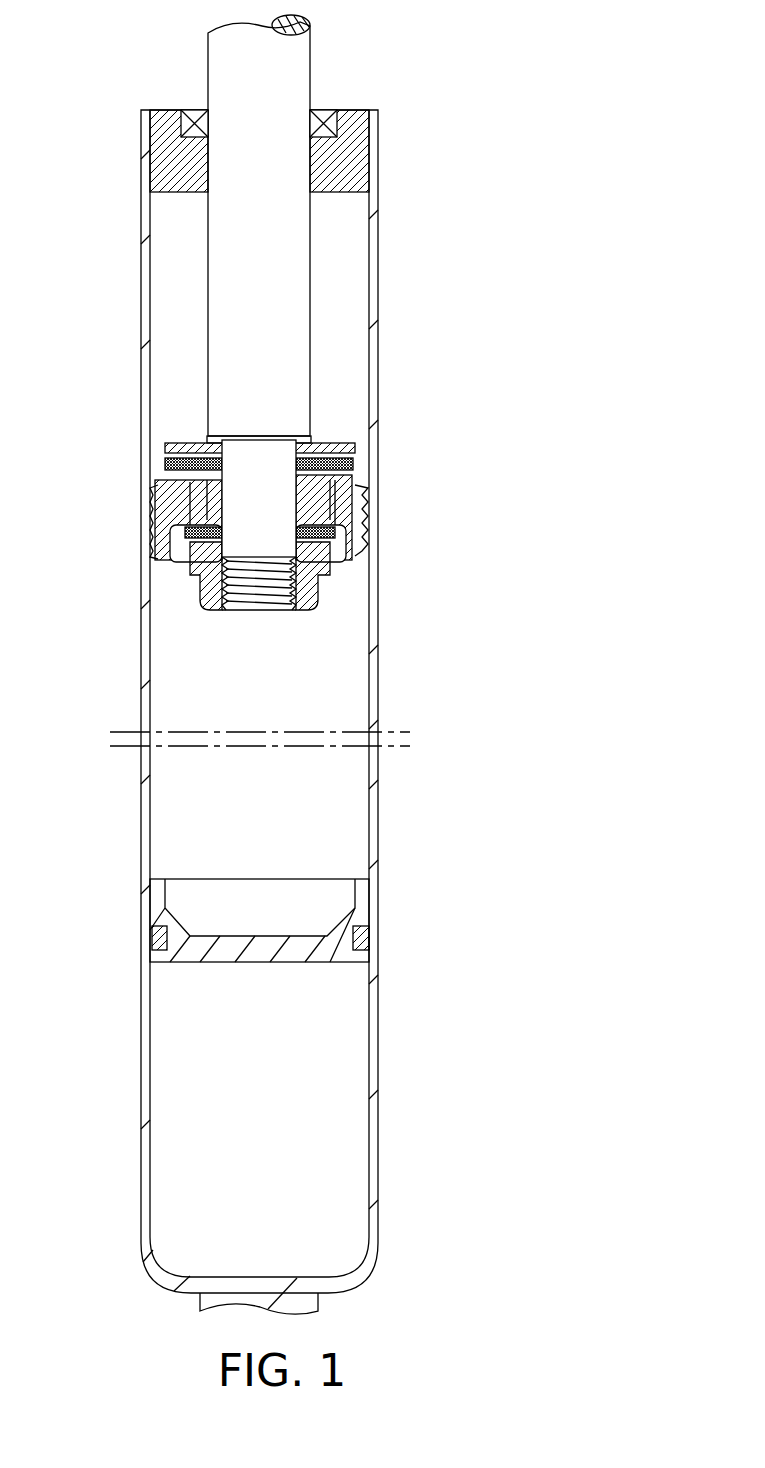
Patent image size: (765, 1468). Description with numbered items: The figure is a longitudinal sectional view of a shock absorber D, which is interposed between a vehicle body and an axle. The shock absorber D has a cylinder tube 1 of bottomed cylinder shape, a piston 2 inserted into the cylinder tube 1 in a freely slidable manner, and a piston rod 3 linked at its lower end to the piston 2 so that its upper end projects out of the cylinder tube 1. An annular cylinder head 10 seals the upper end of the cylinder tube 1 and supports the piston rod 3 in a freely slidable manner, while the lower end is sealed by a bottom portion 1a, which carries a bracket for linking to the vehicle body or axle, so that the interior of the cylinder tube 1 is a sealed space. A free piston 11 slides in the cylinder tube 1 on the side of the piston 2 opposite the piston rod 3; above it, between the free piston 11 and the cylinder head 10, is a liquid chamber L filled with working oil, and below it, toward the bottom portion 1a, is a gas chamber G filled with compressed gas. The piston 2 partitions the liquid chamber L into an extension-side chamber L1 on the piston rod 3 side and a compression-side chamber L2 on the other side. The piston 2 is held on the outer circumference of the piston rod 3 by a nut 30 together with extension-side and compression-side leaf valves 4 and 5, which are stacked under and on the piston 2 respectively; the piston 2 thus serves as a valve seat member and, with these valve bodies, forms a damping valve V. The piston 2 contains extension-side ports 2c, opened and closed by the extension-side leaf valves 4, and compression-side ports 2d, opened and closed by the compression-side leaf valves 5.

The cylinder tube 1 is at (387, 706).
The bottom portion 1a is at (326, 1293).
The piston 2 is at (373, 509).
The extension-side port 2c is at (156, 521).
The compression-side port 2d is at (364, 554).
The piston rod 3 is at (300, 70).
The extension-side leaf valve 4 is at (188, 556).
The compression-side leaf valve 5 is at (354, 463).
The cylinder head 10 is at (335, 192).
The free piston 11 is at (184, 964).
The nut 30 is at (326, 612).
The shock absorber D is at (120, 167).
The damping valve V is at (256, 525).
The liquid chamber L is at (176, 785).
The extension-side chamber L1 is at (190, 307).
The compression-side chamber L2 is at (275, 712).
The gas chamber G is at (270, 1122).